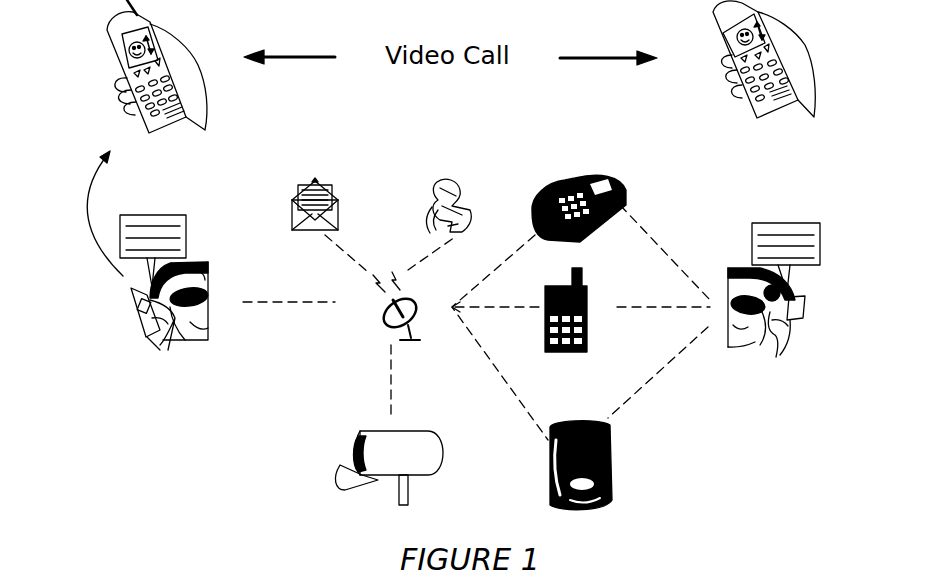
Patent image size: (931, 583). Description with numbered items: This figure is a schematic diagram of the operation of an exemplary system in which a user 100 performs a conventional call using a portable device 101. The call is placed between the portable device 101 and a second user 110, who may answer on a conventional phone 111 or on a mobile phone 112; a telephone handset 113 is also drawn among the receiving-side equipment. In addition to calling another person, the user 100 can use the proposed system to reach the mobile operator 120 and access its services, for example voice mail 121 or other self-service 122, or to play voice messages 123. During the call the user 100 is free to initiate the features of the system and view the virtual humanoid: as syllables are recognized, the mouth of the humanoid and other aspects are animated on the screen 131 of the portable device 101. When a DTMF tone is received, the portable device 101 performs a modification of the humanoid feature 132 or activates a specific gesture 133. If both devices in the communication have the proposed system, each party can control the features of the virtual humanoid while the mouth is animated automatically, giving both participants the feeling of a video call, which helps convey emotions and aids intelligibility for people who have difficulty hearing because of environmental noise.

The user 100 is at (213, 282).
The portable device 101 is at (135, 289).
The user 110 is at (727, 350).
The conventional phone 111 is at (626, 186).
The mobile phone 112 is at (589, 288).
The telephone handset 113 is at (612, 457).
The mobile operator 120 is at (412, 300).
The voice mail 121 is at (409, 430).
The other self-service 122 is at (470, 187).
The voice messages 123 is at (333, 178).
The screen 131 is at (110, 46).
The humanoid feature 132 is at (110, 31).
The specific gesture 133 is at (149, 31).